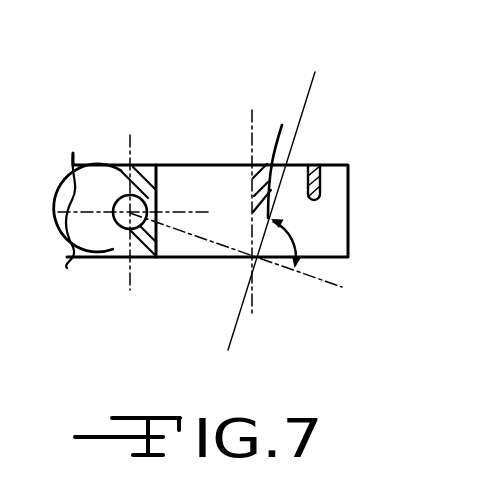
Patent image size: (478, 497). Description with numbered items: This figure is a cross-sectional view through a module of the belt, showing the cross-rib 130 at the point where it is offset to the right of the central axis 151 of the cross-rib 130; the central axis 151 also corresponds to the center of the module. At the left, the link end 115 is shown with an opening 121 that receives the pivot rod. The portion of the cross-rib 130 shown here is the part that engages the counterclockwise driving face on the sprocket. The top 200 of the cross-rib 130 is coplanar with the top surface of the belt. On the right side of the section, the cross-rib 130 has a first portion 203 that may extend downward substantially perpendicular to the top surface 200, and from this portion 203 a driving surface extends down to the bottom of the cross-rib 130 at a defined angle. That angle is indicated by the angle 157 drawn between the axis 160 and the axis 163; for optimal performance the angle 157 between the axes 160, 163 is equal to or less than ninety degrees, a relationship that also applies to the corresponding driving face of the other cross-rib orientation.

The link end 115 is at (120, 167).
The opening 121 is at (114, 250).
The cross-rib 130 is at (257, 183).
The central axis 151 is at (250, 125).
The angle 157 is at (298, 243).
The axis 160 is at (318, 283).
The axis 163 is at (308, 102).
The top of the cross-rib 200 is at (282, 125).
The first portion 203 is at (305, 166).